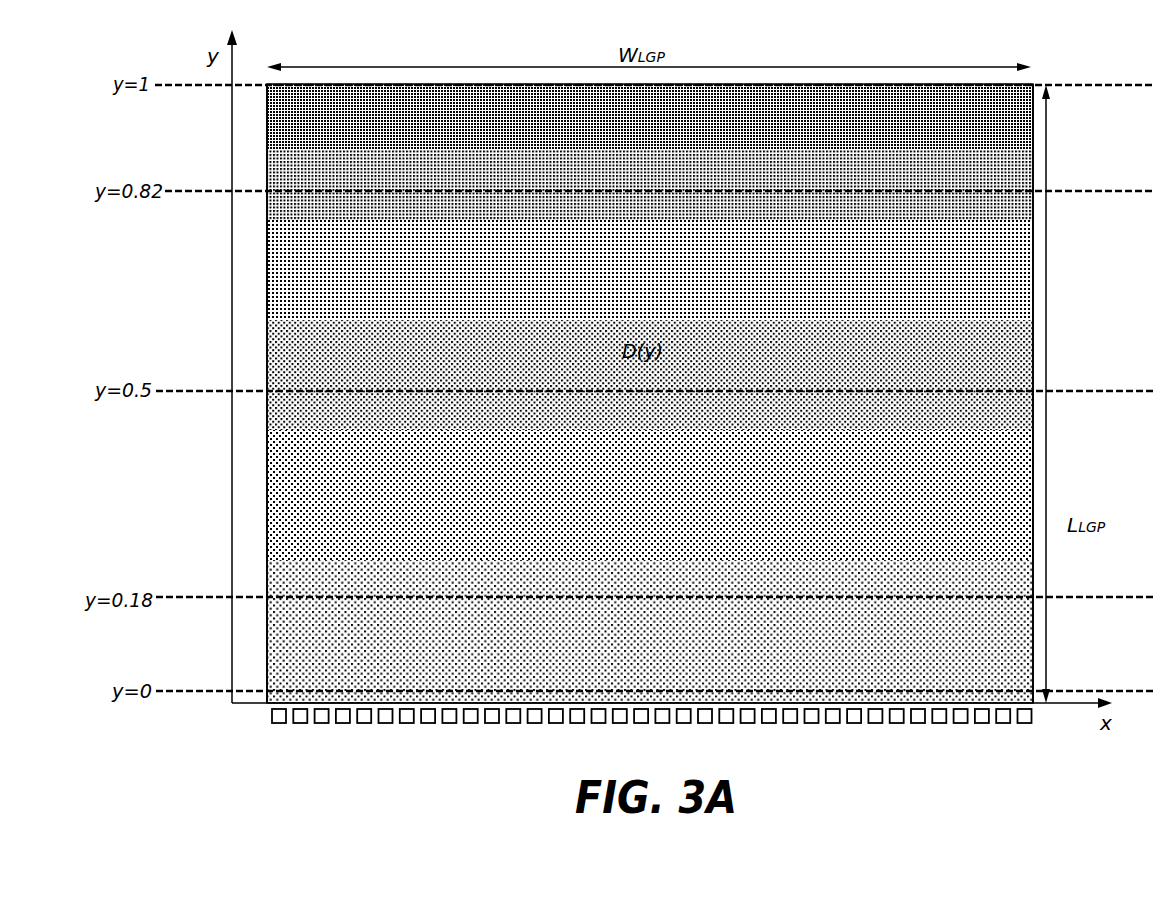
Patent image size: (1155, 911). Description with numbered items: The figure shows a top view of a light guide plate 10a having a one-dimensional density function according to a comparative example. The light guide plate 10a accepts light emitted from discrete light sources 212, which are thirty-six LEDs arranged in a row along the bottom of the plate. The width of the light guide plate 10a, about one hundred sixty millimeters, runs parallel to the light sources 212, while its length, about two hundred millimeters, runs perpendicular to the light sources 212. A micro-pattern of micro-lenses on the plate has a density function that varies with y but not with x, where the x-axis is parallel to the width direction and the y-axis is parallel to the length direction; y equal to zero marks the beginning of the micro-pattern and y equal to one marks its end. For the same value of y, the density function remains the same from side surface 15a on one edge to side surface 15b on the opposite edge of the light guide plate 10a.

The light guide plate 10a is at (432, 44).
The side surface 15a is at (268, 325).
The side surface 15b is at (1036, 308).
The light sources 212 is at (276, 724).